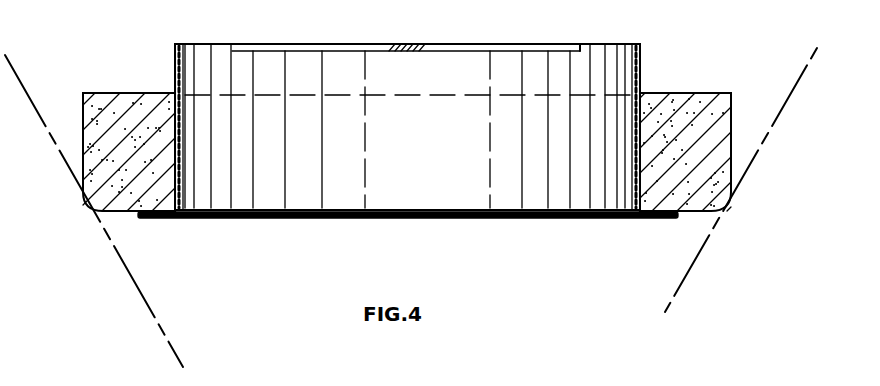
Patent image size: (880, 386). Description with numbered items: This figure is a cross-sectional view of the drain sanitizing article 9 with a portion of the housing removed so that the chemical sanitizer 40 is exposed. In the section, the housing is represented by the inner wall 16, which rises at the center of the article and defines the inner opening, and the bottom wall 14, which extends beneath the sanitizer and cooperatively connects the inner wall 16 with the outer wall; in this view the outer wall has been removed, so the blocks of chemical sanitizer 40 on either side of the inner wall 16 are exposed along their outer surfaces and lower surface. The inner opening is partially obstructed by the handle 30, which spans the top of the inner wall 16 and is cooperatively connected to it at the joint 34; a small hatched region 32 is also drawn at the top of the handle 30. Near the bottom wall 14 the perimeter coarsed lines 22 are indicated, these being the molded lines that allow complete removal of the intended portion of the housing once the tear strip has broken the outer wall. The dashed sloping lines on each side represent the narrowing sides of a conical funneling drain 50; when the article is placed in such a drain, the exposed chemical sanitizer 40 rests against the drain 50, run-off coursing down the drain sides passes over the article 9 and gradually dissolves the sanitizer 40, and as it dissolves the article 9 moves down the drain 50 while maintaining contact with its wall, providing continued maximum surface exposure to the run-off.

The drain sanitizing article 9 is at (712, 58).
The bottom wall 14 is at (258, 218).
The inner wall 16 is at (190, 63).
The perimeter coarsed lines 22 is at (138, 218).
The handle 30 is at (459, 49).
The joint 32 is at (400, 45).
The joint 34 is at (582, 46).
The chemical sanitizer 40 is at (120, 96).
The drain 50 is at (34, 99).